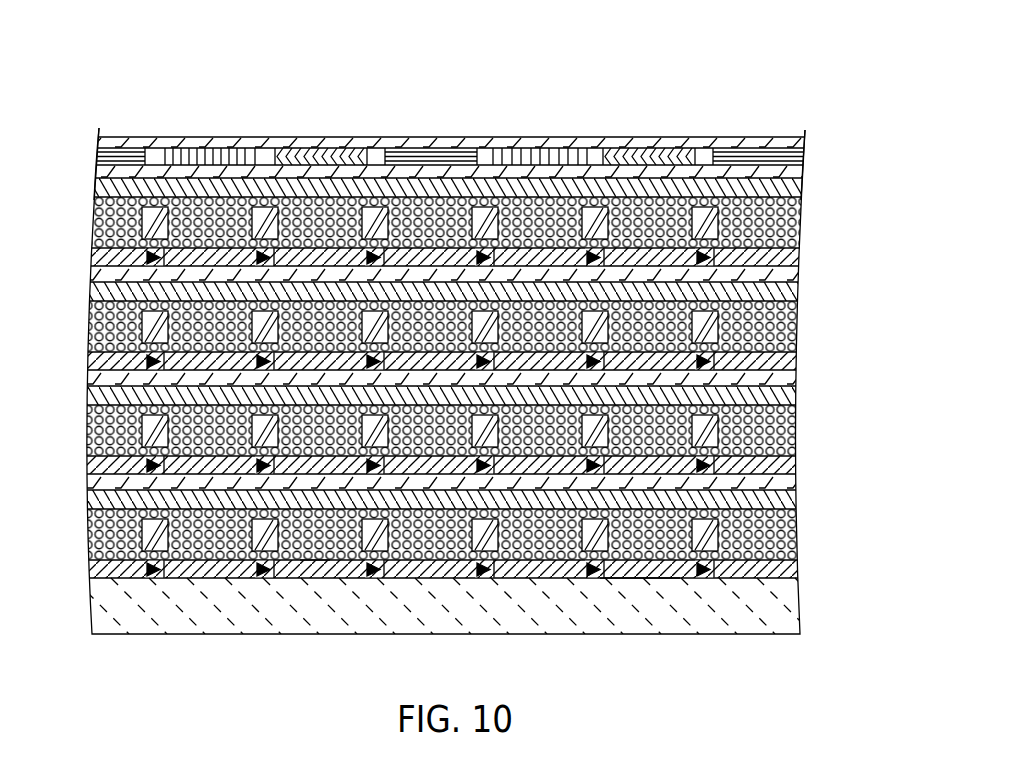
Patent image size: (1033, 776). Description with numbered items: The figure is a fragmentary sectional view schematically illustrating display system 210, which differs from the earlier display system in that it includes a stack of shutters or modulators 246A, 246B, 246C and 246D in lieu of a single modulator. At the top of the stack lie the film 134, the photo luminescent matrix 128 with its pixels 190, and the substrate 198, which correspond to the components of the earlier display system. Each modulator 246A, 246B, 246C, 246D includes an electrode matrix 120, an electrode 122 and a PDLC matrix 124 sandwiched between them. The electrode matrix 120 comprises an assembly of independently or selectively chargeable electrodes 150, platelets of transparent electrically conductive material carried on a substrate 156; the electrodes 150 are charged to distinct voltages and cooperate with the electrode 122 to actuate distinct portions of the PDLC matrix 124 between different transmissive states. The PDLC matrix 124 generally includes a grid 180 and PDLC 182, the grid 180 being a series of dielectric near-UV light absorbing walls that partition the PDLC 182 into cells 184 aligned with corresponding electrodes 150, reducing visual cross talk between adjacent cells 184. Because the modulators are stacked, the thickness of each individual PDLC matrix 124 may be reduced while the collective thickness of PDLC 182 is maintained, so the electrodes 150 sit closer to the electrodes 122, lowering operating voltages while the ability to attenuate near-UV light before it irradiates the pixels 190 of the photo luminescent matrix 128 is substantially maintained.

The display system 210 is at (173, 80).
The film 134 is at (98, 146).
The photo luminescent matrix 128 is at (800, 155).
The pixels 190 is at (239, 152).
The substrate 198 is at (800, 176).
The electrode 122 is at (797, 185).
The PDLC matrix 124 is at (800, 197).
The electrode matrix 120 is at (800, 248).
The modulator 246A is at (82, 493).
The modulator 246B is at (82, 389).
The modulator 246C is at (82, 285).
The modulator 246D is at (82, 180).
The PDLC 182 is at (317, 557).
The cells 184 is at (498, 540).
The electrodes 150 is at (640, 578).
The substrate 156 is at (690, 625).
The grid 180 is at (715, 537).